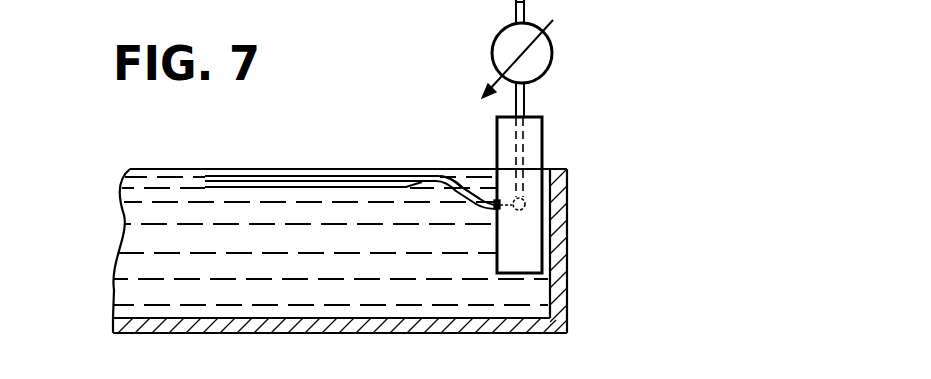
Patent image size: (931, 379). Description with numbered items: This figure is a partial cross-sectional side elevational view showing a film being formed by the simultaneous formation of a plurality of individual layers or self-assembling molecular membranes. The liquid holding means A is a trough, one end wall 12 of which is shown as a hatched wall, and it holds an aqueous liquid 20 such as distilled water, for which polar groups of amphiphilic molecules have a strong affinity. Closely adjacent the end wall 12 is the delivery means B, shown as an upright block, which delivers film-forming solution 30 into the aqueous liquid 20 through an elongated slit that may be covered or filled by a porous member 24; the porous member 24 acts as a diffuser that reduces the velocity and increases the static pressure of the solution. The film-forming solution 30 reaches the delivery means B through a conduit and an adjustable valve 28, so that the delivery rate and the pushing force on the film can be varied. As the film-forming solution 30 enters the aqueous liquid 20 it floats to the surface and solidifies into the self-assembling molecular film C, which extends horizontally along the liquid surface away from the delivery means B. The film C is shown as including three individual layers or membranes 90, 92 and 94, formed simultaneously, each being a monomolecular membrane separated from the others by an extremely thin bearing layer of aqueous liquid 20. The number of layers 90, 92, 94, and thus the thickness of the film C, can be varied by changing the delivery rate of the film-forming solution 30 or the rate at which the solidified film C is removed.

The aqueous liquid 20 is at (133, 264).
The end wall 12 is at (567, 240).
The liquid holding means A is at (222, 332).
The delivery means B is at (545, 128).
The self-assembling molecular film C is at (350, 168).
The individual layer 90 is at (204, 172).
The individual layer 92 is at (201, 179).
The individual layer 94 is at (204, 184).
The film-forming solution 30 is at (463, 178).
The porous member 24 is at (495, 207).
The adjustable valve 28 is at (536, 53).